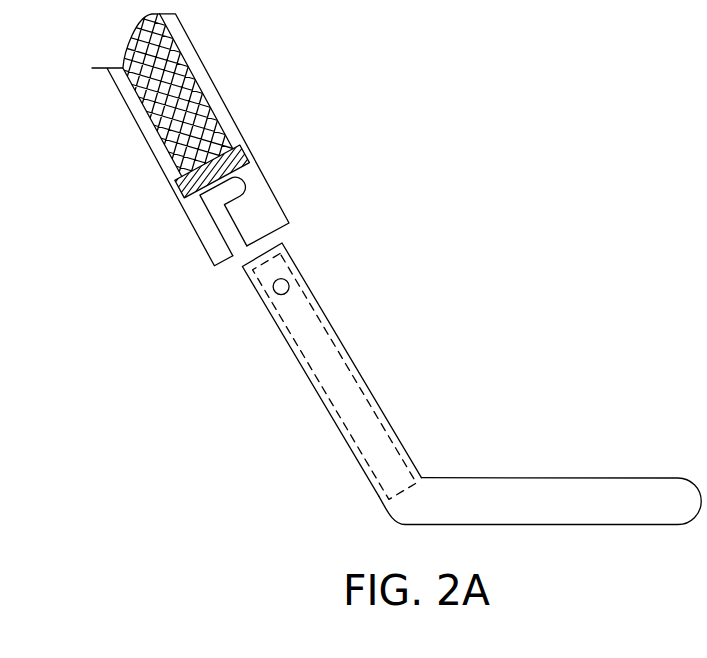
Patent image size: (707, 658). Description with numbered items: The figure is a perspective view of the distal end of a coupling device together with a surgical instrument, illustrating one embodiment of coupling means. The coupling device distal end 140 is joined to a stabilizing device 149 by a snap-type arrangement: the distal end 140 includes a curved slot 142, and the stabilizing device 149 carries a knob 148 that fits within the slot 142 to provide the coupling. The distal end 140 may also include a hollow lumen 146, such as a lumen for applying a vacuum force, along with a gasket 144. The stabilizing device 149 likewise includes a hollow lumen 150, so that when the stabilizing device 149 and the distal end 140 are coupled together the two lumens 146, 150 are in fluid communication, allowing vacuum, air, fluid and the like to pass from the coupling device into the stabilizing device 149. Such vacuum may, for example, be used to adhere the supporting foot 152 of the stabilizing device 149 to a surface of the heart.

The coupling device distal end 140 is at (275, 187).
The curved slot 142 is at (218, 197).
The gasket 144 is at (248, 147).
The hollow lumen 146 is at (197, 87).
The knob 148 is at (285, 277).
The stabilizing device 149 is at (342, 338).
The hollow lumen 150 is at (347, 398).
The supporting foot 152 is at (578, 478).